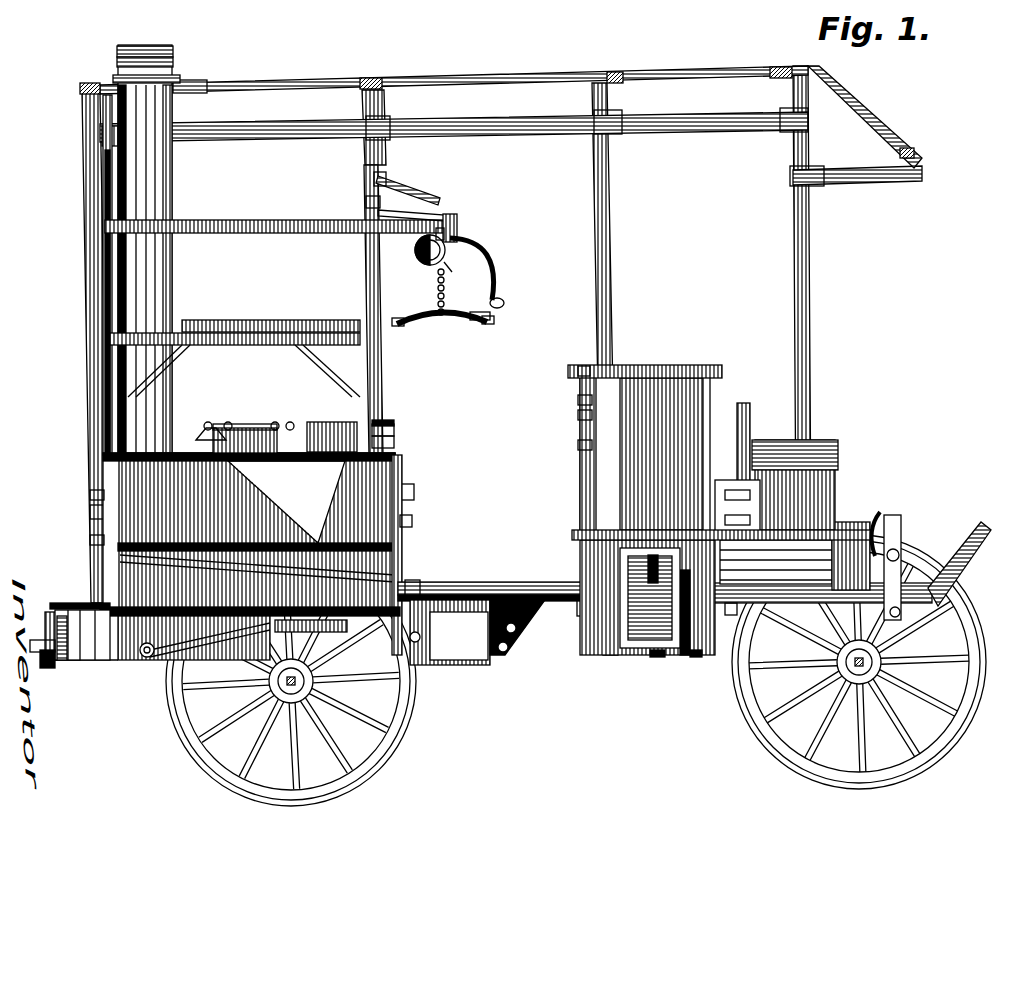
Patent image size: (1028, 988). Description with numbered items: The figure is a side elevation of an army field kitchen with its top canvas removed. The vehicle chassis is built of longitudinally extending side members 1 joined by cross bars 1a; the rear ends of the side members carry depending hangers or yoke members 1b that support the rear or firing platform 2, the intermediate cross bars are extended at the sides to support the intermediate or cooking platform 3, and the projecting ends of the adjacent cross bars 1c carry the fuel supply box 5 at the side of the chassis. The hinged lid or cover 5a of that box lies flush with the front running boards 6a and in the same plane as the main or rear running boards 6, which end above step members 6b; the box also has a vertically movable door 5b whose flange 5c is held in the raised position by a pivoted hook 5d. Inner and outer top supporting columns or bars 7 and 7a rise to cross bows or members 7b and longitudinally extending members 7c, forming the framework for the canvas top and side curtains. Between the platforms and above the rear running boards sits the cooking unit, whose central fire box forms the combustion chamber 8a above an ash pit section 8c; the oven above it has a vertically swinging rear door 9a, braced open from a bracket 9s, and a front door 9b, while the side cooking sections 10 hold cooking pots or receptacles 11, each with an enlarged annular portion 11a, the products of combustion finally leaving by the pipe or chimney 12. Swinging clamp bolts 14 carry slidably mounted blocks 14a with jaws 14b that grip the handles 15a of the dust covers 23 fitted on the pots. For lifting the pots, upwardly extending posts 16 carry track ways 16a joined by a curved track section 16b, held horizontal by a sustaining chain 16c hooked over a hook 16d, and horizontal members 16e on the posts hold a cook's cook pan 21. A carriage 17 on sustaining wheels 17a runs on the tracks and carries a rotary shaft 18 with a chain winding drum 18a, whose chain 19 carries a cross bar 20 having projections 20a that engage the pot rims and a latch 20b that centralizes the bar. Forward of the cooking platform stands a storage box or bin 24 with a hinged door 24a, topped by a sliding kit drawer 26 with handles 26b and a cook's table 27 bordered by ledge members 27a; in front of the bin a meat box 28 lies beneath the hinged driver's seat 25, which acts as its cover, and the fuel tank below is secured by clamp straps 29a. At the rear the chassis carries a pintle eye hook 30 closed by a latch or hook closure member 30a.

The side members 1 is at (550, 612).
The cross bars 1a is at (413, 580).
The depending hangers or yoke members 1b is at (50, 614).
The adjacent cross bars 1c is at (582, 617).
The rear or firing platform 2 is at (73, 661).
The intermediate or cooking platform 3 is at (490, 582).
The fuel supply box 5 is at (709, 655).
The hinged lid or cover 5a is at (690, 546).
The vertically movable door 5b is at (656, 657).
The flange 5c is at (695, 657).
The pivoted hook 5d is at (648, 568).
The main or rear running boards 6 is at (321, 542).
The front running boards 6a is at (840, 530).
The step members 6b is at (78, 608).
The inner top supporting columns or bars 7 is at (809, 276).
The outer top supporting columns or bars 7a is at (386, 161).
The cross bows or members 7b is at (89, 82).
The longitudinally extending members 7c is at (700, 115).
The combustion chamber 8a is at (150, 658).
The ash pit section 8c is at (265, 660).
The rear door 9a is at (92, 540).
The front door 9b is at (404, 525).
The bracket 9s is at (92, 497).
The side cooking sections 10 is at (249, 530).
The cooking pots or receptacles 11 is at (250, 430).
The enlarged annular portion 11a is at (258, 425).
The pipe or chimney 12 is at (174, 290).
The swinging clamp bolts 14 is at (203, 428).
The slidably mounted blocks 14a is at (231, 423).
The jaws 14b is at (210, 422).
The handles 15a is at (342, 423).
The upwardly extending posts 16 is at (104, 290).
The track ways 16a is at (268, 220).
The curved track section 16b is at (420, 210).
The sustaining chain 16c is at (402, 185).
The hook 16d is at (366, 201).
The horizontal members 16e is at (270, 345).
The carriage 17 is at (452, 236).
The sustaining wheels 17a is at (458, 222).
The rotary shaft 18 is at (418, 258).
The chain winding drum 18a is at (418, 250).
The chain 19 is at (445, 288).
The cross bar 20 is at (440, 318).
The projections 20a is at (398, 326).
The latch 20b is at (491, 317).
The cook's cook pan 21 is at (263, 320).
The dust covers 23 is at (382, 422).
The storage box or bin 24 is at (690, 462).
The hinged door 24a is at (578, 446).
The driver's seat 25 is at (773, 440).
The kit drawer 26 is at (578, 400).
The handles 26b is at (578, 414).
The cook's table 27 is at (582, 368).
The ledge members 27a is at (722, 371).
The meat box 28 is at (837, 482).
The clamp straps 29a is at (893, 515).
The pintle eye hook 30 is at (47, 668).
The latch or hook closure member 30a is at (42, 640).